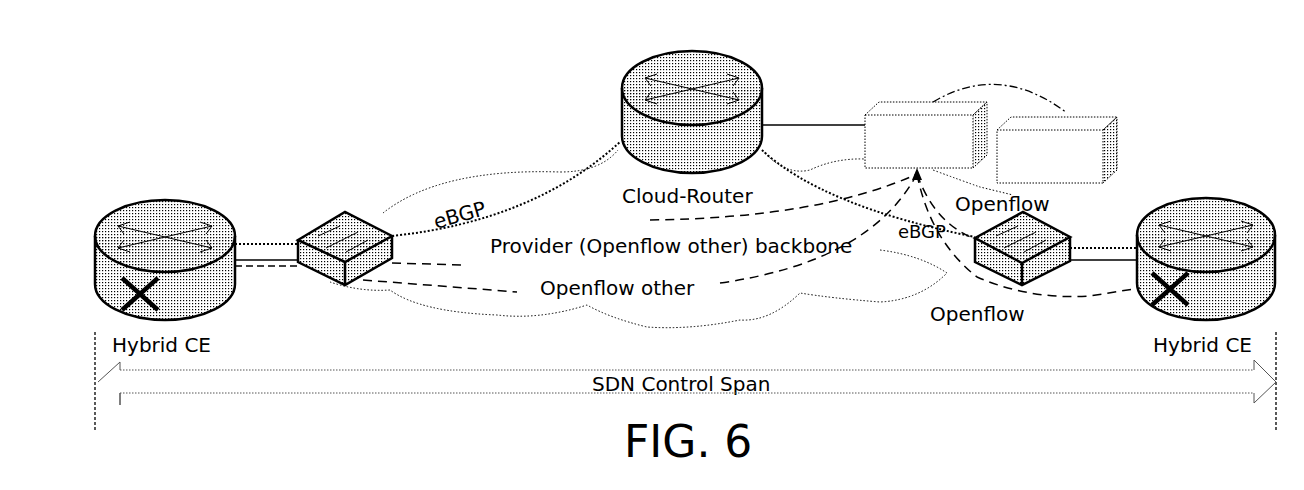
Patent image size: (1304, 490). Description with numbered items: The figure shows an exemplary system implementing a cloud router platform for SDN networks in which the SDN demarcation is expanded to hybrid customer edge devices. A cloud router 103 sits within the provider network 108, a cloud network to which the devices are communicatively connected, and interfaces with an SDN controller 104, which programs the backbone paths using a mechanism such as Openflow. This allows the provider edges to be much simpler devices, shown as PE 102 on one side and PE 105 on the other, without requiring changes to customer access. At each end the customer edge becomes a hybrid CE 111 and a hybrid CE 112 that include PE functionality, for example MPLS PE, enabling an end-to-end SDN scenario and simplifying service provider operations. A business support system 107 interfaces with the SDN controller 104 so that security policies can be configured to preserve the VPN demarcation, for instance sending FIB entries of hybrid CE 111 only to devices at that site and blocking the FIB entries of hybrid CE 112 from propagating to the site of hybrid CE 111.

The provider edge 102 is at (306, 266).
The cloud router 103 is at (703, 50).
The SDN controller 104 is at (910, 102).
The provider edge 105 is at (1053, 273).
The business support system 107 is at (1092, 117).
The network 108 is at (450, 177).
The hybrid CE 111 is at (152, 200).
The hybrid CE 112 is at (1253, 205).